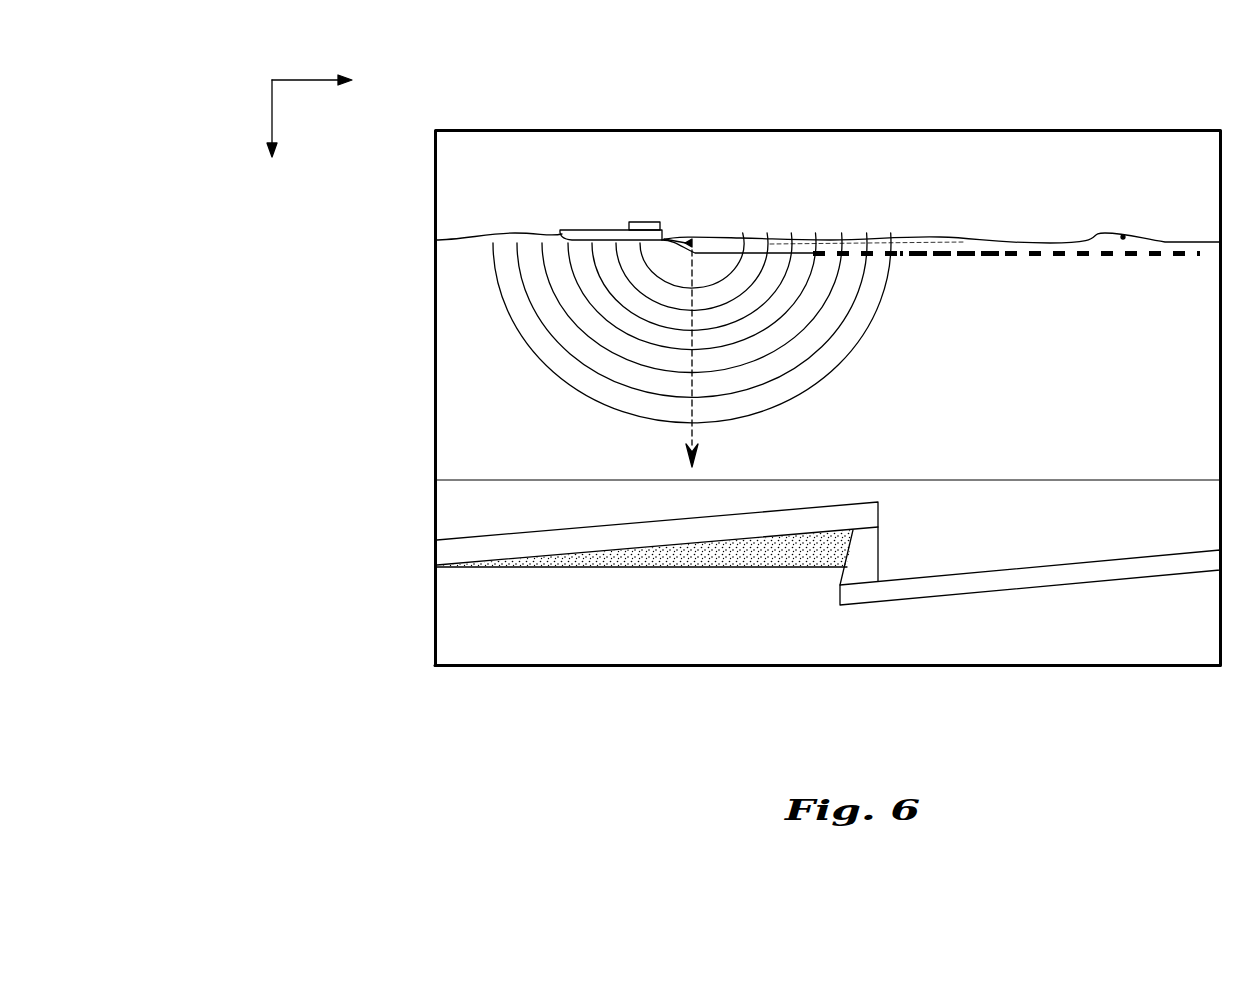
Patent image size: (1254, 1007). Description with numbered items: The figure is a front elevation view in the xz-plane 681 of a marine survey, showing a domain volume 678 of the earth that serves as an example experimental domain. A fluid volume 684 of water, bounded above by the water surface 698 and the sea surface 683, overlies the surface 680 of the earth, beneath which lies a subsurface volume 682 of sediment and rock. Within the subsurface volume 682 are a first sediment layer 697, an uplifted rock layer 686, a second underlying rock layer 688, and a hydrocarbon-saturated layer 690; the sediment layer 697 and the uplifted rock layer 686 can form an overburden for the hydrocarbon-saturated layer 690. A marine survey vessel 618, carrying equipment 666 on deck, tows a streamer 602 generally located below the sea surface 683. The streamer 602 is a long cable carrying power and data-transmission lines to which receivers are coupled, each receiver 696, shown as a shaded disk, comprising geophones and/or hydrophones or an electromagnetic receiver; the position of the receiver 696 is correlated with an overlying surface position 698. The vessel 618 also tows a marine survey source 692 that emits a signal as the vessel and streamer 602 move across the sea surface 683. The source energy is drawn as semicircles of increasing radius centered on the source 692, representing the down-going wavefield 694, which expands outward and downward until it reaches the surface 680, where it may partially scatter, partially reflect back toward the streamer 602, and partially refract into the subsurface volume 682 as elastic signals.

The xz-plane 681 is at (272, 80).
The domain volume 678 is at (340, 299).
The fluid volume 684 is at (453, 385).
The sea surface 683 is at (960, 242).
The water surface 698 is at (1123, 237).
The marine survey vessel 618 is at (602, 230).
The vessel equipment 666 is at (650, 222).
The marine survey source 692 is at (688, 241).
The down-going wavefield 694 is at (856, 345).
The marine survey receiver 696 is at (1127, 258).
The streamer 602 is at (996, 275).
The surface of the earth 680 is at (492, 478).
The subsurface volume 682 is at (455, 500).
The uplifted rock layer 686 is at (455, 557).
The hydrocarbon-saturated layer 690 is at (657, 568).
The second underlying rock layer 688 is at (558, 652).
The first sediment layer 697 is at (1086, 538).